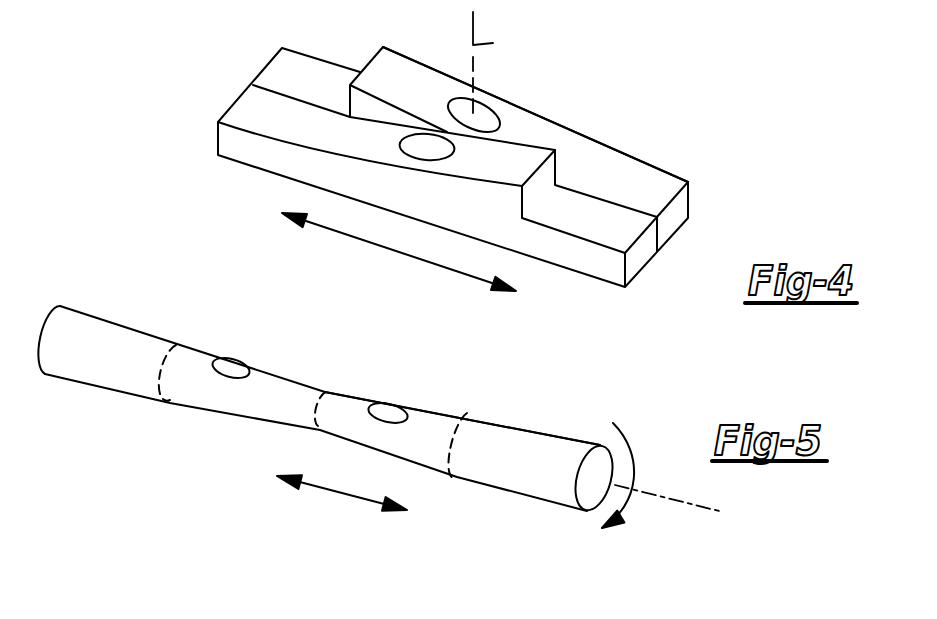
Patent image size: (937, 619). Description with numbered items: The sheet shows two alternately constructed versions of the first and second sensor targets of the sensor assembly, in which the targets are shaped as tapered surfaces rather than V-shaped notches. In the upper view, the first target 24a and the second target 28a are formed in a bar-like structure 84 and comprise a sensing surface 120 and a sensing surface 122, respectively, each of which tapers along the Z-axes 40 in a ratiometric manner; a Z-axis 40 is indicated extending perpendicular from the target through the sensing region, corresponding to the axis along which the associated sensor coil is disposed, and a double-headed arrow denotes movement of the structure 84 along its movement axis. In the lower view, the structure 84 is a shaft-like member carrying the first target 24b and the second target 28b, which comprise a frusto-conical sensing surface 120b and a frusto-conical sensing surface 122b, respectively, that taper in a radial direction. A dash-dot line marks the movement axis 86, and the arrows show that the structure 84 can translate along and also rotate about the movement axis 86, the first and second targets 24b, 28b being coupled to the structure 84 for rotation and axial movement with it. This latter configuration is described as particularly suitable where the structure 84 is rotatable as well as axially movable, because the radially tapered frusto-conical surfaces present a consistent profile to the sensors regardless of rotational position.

In FIG. 4, the sensing surface 120 is at (387, 140).
In FIG. 4, the second target 28a is at (412, 90).
In FIG. 4, the sensing surface 122 is at (524, 133).
In FIG. 4, the Z-axis 40 is at (493, 43).
In FIG. 4, the first target 24a is at (520, 180).
In FIG. 5, the structure 84 is at (62, 322).
In FIG. 5, the first target 24b is at (193, 355).
In FIG. 5, the frusto-conical sensing surface 120b is at (272, 383).
In FIG. 5, the frusto-conical sensing surface 122b is at (420, 445).
In FIG. 5, the second target 28b is at (453, 418).
In FIG. 5, the movement axis 86 is at (658, 492).